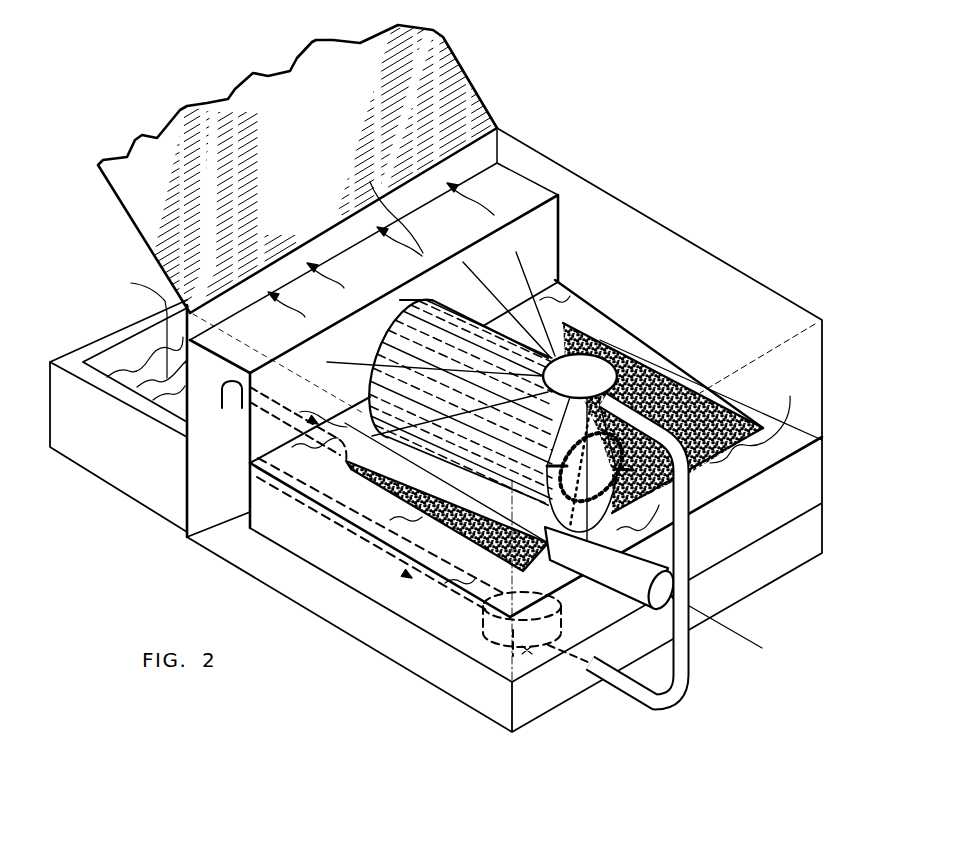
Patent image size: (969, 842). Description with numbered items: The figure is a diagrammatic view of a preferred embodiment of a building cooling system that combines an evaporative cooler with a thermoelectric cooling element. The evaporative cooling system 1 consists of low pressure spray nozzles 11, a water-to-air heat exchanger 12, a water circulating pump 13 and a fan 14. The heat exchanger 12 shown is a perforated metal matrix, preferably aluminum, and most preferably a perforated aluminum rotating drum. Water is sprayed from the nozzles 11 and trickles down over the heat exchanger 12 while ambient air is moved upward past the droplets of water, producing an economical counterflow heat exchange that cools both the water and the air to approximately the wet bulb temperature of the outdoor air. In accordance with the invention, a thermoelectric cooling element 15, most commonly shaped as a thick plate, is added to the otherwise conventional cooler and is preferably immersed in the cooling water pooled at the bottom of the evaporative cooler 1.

The evaporative cooling system 1 is at (724, 203).
The low pressure spray nozzles 11 is at (607, 333).
The water-to-air heat exchanger 12 is at (516, 566).
The water circulating pump 13 is at (528, 657).
The fan 14 is at (626, 582).
The thermoelectric cooling element 15 is at (385, 432).